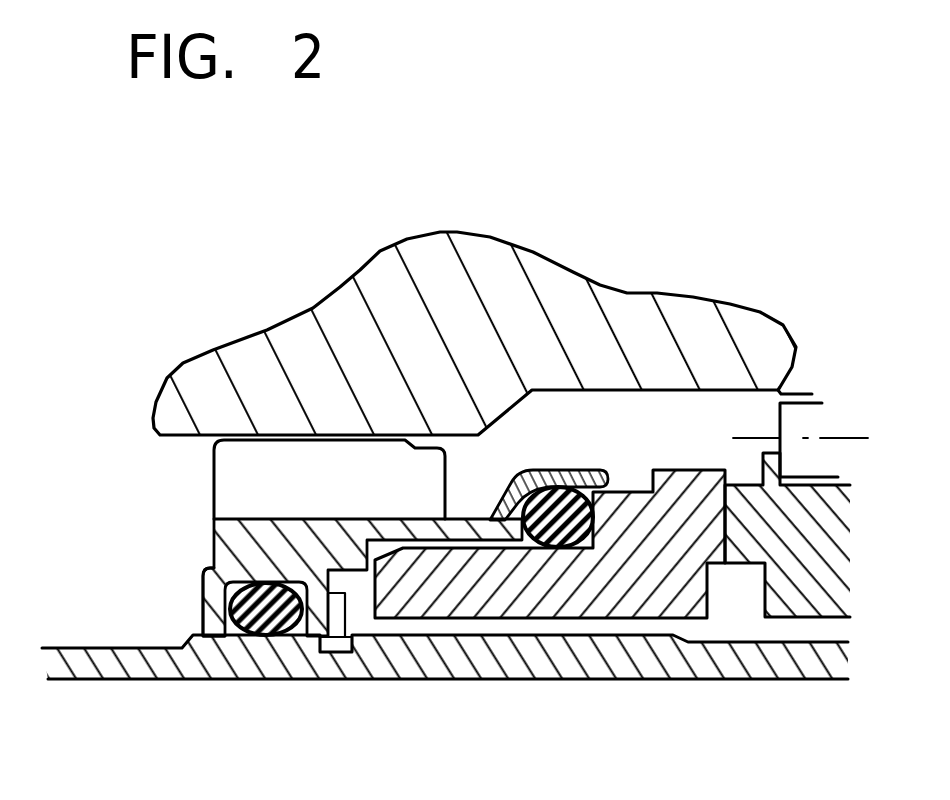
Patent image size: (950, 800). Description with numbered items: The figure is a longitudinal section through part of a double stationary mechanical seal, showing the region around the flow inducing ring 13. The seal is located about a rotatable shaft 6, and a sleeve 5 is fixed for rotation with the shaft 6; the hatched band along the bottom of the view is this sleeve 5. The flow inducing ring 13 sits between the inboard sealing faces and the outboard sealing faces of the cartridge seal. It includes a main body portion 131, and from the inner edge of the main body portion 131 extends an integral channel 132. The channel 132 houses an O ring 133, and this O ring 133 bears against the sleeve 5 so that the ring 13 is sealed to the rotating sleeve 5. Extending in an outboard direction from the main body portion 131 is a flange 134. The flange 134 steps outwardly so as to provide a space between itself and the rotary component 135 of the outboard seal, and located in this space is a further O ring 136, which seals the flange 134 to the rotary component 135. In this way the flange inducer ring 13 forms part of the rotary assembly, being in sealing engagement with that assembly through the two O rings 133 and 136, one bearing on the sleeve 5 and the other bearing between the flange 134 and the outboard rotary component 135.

The sleeve 5 is at (518, 663).
The rotatable shaft 6 is at (772, 723).
The flow inducing ring 13 is at (230, 563).
The main body portion 131 is at (212, 535).
The channel 132 is at (203, 612).
The O ring 133 is at (263, 634).
The flange 134 is at (520, 472).
The rotary component of the outboard seal 135 is at (693, 493).
The further O ring 136 is at (570, 483).